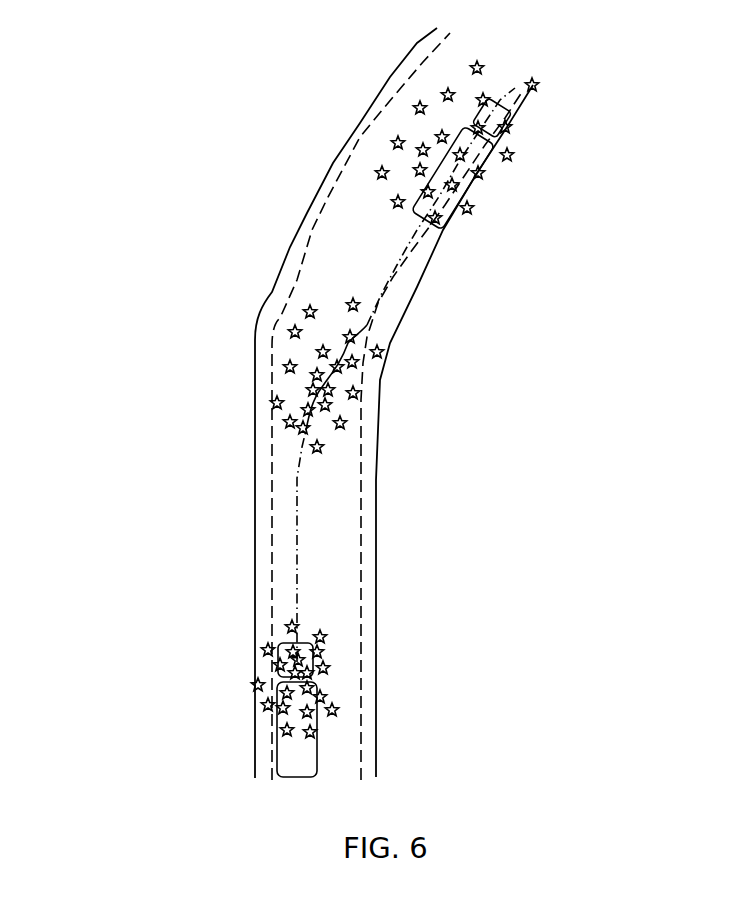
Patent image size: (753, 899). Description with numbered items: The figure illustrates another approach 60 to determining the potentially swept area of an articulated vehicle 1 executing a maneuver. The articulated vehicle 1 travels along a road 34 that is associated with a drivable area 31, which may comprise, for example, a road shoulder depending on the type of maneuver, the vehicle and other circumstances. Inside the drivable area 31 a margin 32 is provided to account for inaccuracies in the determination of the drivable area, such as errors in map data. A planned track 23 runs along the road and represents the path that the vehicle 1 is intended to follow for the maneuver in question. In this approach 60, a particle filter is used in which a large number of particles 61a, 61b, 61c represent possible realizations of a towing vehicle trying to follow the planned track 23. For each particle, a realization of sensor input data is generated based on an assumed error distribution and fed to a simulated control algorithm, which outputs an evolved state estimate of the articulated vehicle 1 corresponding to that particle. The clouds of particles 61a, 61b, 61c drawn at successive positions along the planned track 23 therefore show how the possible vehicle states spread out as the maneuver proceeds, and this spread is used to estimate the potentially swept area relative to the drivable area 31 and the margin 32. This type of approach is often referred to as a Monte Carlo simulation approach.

The approach 60 is at (90, 53).
The drivable area 31 is at (357, 202).
The margin 32 is at (263, 480).
The road 34 is at (388, 78).
The planned track 23 is at (295, 558).
The particle 61a is at (340, 677).
The particle 61b is at (390, 348).
The particle 61c is at (533, 127).
The articulated vehicle 1 is at (302, 758).